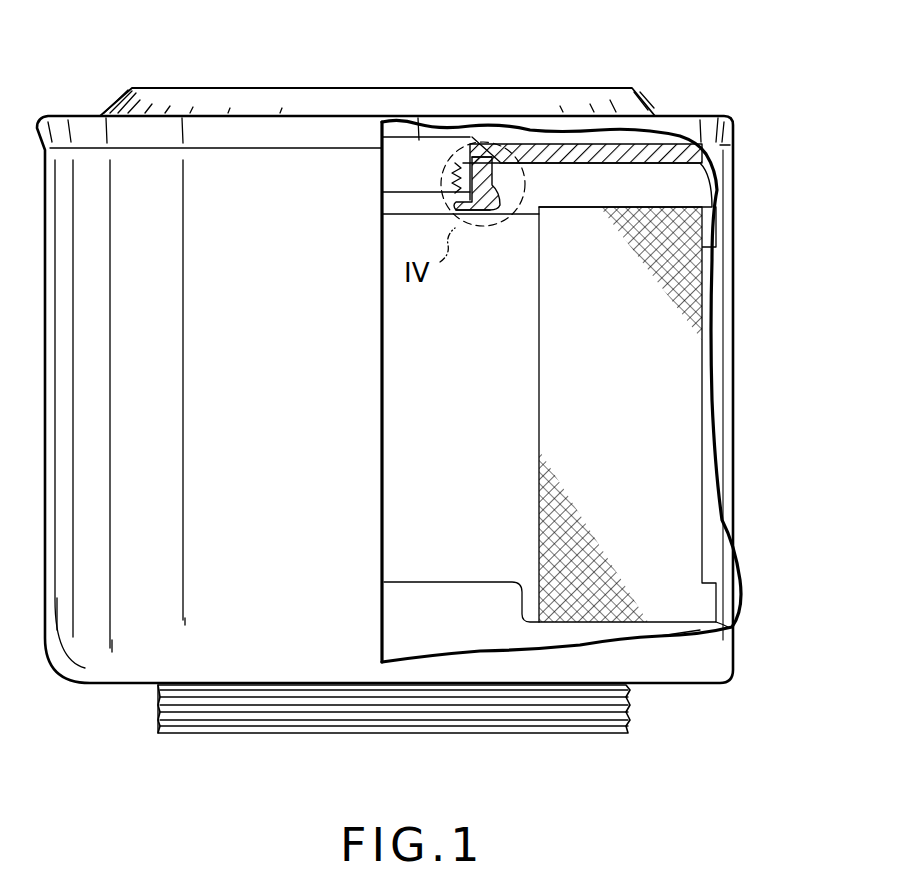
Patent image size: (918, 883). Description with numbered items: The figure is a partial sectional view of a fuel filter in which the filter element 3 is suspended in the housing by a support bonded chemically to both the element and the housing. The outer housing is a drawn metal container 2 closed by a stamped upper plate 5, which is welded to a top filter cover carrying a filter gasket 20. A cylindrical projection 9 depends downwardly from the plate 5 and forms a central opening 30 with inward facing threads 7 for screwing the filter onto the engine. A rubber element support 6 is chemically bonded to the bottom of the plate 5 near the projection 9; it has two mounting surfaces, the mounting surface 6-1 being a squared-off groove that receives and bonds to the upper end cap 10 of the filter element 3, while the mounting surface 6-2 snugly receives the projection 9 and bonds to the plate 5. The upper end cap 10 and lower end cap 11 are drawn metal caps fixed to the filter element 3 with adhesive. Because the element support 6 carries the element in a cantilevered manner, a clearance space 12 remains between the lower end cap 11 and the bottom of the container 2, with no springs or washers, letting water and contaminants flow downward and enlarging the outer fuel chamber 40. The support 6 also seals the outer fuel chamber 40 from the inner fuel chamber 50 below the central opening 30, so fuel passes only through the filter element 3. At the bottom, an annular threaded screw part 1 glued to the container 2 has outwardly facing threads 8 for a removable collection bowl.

The threaded screw part 1 is at (586, 732).
The drawn metal container 2 is at (736, 364).
The filter element 3 is at (680, 465).
The upper plate 5 is at (636, 158).
The rubber element support 6 is at (512, 180).
The mounting surface 6-1 is at (488, 209).
The mounting surface 6-2 is at (498, 158).
The inward facing threads 7 is at (450, 162).
The outwardly facing threads 8 is at (158, 714).
The cylindrical projection 9 is at (470, 160).
The upper end cap 10 is at (717, 176).
The lower end cap 11 is at (677, 625).
The clearance space 12 is at (395, 628).
The filter gasket 20 is at (202, 100).
The central opening 30 is at (402, 166).
The outer fuel chamber 40 is at (720, 427).
The inner fuel chamber 50 is at (465, 413).